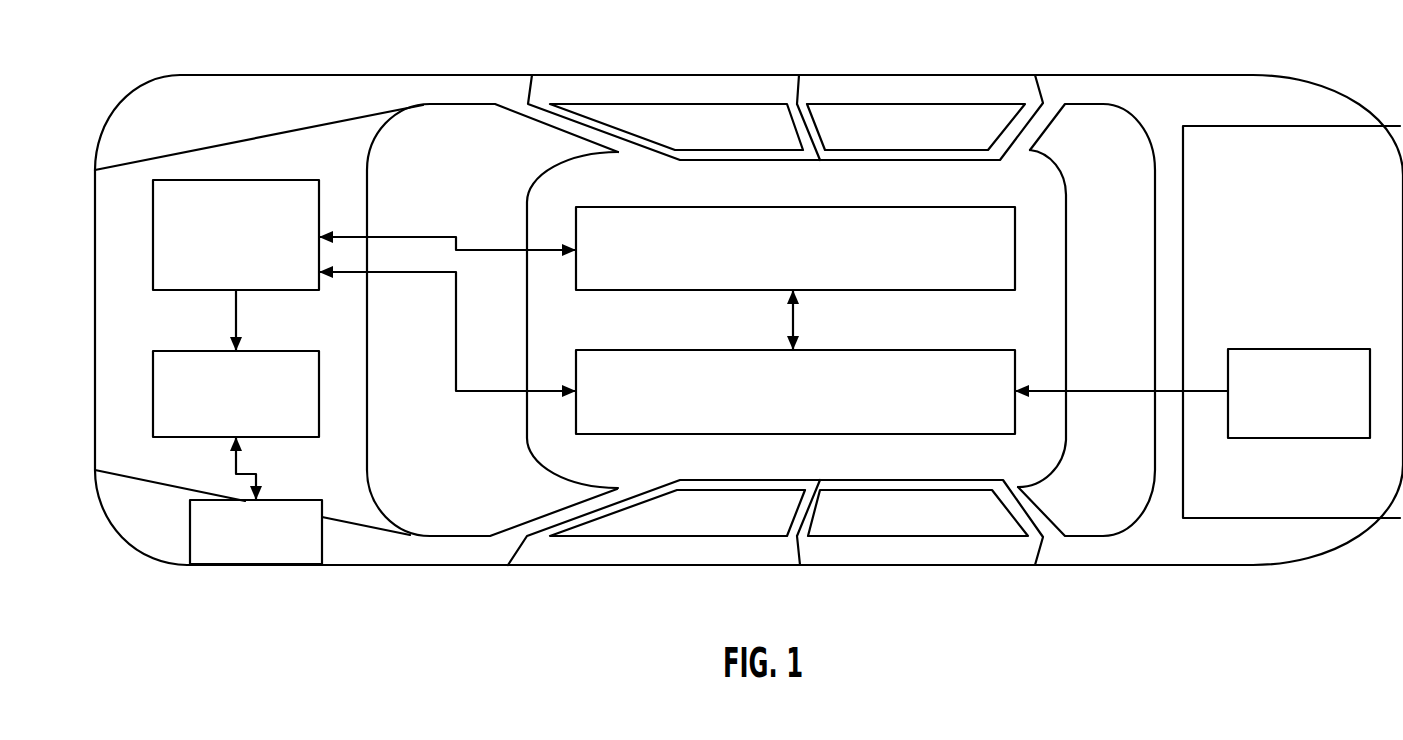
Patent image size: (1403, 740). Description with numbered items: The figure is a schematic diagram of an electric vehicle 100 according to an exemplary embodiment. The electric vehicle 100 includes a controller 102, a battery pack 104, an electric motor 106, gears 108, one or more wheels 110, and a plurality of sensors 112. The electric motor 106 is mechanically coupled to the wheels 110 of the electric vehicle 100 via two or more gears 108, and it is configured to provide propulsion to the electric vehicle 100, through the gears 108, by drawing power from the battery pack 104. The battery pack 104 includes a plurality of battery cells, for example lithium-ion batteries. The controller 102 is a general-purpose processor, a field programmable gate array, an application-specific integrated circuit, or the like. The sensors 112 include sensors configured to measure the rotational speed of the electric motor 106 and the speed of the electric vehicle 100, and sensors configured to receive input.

The electric vehicle 100 is at (1262, 75).
The controller 102 is at (945, 350).
The battery pack 104 is at (945, 207).
The electric motor 106 is at (247, 180).
The gears 108 is at (255, 351).
The wheels 110 is at (267, 499).
The sensors 112 is at (1300, 349).